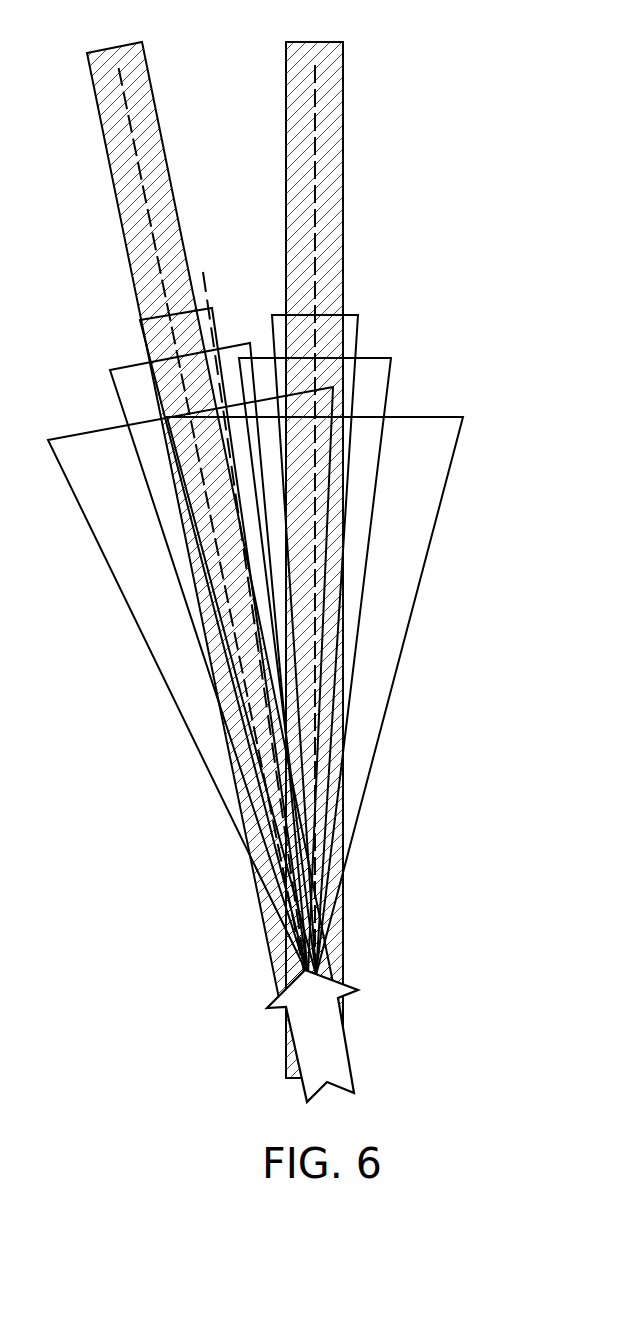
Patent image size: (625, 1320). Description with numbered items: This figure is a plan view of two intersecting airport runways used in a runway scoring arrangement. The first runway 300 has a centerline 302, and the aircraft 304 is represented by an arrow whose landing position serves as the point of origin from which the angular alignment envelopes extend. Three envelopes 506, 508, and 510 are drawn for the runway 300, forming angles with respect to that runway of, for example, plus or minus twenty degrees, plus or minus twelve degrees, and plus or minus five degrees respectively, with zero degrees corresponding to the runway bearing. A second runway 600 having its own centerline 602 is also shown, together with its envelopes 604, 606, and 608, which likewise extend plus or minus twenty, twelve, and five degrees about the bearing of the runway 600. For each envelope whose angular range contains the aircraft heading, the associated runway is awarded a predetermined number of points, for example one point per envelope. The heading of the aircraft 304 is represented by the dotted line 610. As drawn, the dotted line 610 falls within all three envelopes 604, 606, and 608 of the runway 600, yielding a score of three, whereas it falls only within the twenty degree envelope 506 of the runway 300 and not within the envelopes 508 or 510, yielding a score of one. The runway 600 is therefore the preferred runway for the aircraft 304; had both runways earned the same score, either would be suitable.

The runway 300 is at (328, 88).
The centerline 302 is at (315, 140).
The aircraft 304 is at (338, 1055).
The angular alignment envelope 506 is at (438, 480).
The angular alignment envelope 508 is at (377, 395).
The angular alignment envelope 510 is at (352, 330).
The runway 600 is at (137, 70).
The centerline 602 is at (135, 131).
The envelope 604 is at (90, 507).
The envelope 606 is at (127, 388).
The envelope 608 is at (150, 343).
The dotted line 610 is at (205, 283).